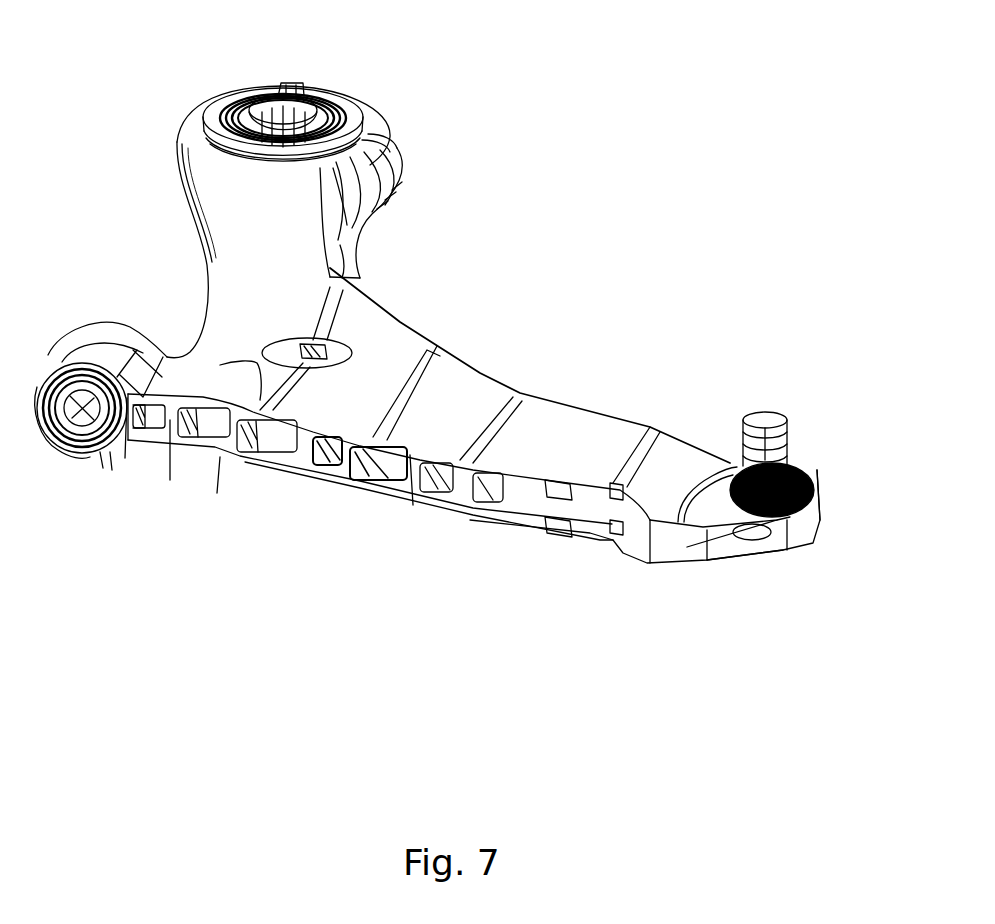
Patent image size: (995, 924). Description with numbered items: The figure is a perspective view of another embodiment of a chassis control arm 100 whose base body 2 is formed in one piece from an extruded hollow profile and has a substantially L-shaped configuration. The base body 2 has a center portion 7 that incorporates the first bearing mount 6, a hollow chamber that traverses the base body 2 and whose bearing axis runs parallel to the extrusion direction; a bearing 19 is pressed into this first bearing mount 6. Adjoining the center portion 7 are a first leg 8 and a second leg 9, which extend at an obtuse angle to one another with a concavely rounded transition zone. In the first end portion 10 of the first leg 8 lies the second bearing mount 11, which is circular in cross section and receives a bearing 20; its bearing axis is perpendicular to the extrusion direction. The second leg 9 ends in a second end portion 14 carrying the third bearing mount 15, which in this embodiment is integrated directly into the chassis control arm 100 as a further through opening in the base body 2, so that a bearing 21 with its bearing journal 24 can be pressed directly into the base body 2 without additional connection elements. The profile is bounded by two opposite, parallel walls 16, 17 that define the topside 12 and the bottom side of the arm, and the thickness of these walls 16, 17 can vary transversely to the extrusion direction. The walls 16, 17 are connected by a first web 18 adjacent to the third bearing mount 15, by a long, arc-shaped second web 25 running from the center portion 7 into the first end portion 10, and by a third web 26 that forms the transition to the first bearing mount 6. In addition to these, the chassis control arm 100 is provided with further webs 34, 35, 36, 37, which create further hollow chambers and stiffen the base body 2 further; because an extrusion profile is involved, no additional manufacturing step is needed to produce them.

The chassis control arm 100 is at (530, 267).
The base body 2 is at (392, 352).
The first bearing mount 6 is at (100, 452).
The center portion 7 is at (255, 412).
The first leg 8 is at (275, 268).
The second leg 9 is at (552, 444).
The first end portion 10 is at (357, 100).
The second bearing mount 11 is at (368, 113).
The topside 12 is at (368, 146).
The second end portion 14 is at (703, 442).
The third bearing mount 15 is at (803, 530).
The wall 16 is at (441, 470).
The wall 17 is at (376, 490).
The first web 18 is at (466, 494).
The bearing 19 is at (84, 374).
The bearing 20 is at (253, 102).
The bearing 21 is at (810, 462).
The bearing journal 24 is at (778, 416).
The second web 25 is at (166, 440).
The third web 26 is at (130, 440).
The further web 34 is at (220, 457).
The further web 35 is at (293, 452).
The further web 36 is at (350, 474).
The further web 37 is at (411, 492).